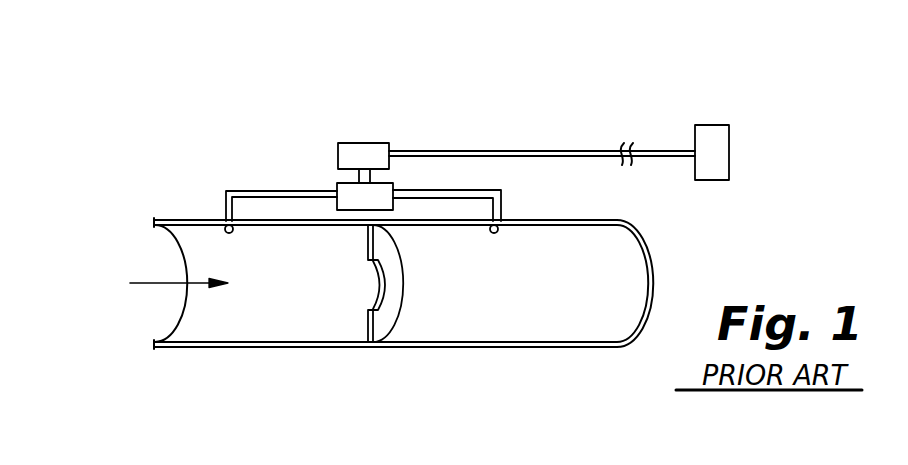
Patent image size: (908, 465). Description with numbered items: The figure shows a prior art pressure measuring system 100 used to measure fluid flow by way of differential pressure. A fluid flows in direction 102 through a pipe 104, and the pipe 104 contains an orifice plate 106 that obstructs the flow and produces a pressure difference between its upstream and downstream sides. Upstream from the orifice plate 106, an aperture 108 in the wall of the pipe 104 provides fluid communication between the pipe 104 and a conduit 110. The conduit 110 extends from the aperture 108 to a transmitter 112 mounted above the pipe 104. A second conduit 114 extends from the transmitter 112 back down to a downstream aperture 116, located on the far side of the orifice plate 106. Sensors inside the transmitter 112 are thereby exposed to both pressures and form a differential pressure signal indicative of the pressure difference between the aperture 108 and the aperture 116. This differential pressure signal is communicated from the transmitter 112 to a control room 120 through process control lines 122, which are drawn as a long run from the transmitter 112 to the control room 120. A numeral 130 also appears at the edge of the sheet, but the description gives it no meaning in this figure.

The pressure measuring system 100 is at (310, 353).
The direction 102 is at (157, 286).
The pipe 104 is at (202, 347).
The orifice plate 106 is at (387, 318).
The aperture 108 is at (226, 224).
The conduit 110 is at (250, 190).
The transmitter 112 is at (355, 143).
The second conduit 114 is at (503, 199).
The downstream aperture 116 is at (497, 234).
The control room 120 is at (708, 125).
The process control lines 122 is at (490, 151).
The flow system (adjacent figure) 130 is at (906, 449).